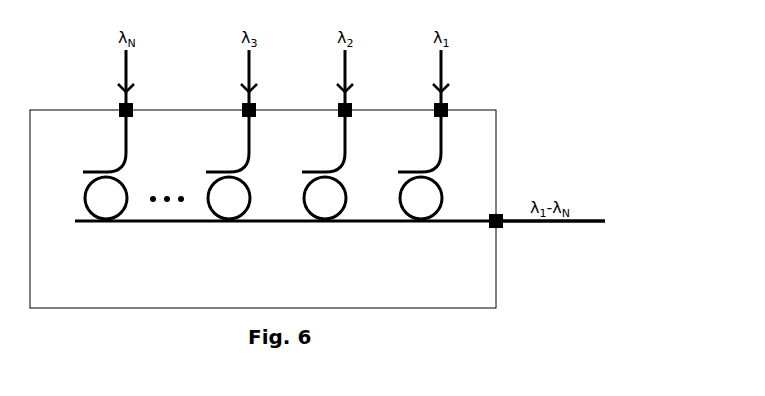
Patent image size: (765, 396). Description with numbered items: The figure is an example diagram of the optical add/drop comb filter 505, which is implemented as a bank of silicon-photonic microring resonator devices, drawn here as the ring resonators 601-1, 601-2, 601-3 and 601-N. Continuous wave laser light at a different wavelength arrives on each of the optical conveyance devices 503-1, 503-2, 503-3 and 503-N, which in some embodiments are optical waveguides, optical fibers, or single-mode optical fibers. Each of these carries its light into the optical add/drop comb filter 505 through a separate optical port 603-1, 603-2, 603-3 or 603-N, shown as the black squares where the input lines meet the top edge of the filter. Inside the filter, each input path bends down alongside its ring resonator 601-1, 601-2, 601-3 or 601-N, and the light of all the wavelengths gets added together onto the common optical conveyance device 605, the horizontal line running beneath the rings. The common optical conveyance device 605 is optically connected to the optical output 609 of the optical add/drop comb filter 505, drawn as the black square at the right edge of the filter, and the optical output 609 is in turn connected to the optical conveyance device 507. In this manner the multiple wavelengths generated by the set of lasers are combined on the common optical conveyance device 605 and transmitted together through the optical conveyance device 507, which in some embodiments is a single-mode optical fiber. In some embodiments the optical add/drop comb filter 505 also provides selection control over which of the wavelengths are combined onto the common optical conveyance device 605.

The optical conveyance device 503-N is at (128, 68).
The optical conveyance device 503-3 is at (251, 68).
The optical conveyance device 503-2 is at (347, 68).
The optical conveyance device 503-1 is at (443, 68).
The optical port 603-N is at (133, 103).
The optical port 603-3 is at (256, 103).
The optical port 603-2 is at (352, 103).
The optical port 603-1 is at (448, 103).
The ring resonator N 601-N is at (106, 219).
The ring resonator 3 601-3 is at (229, 219).
The ring resonator 2 601-2 is at (325, 219).
The ring resonator 1 601-1 is at (421, 219).
The common optical conveyance device 605 is at (298, 222).
The optical add/drop comb filter 505 is at (497, 143).
The optical output 609 is at (500, 215).
The optical conveyance device 507 is at (592, 221).